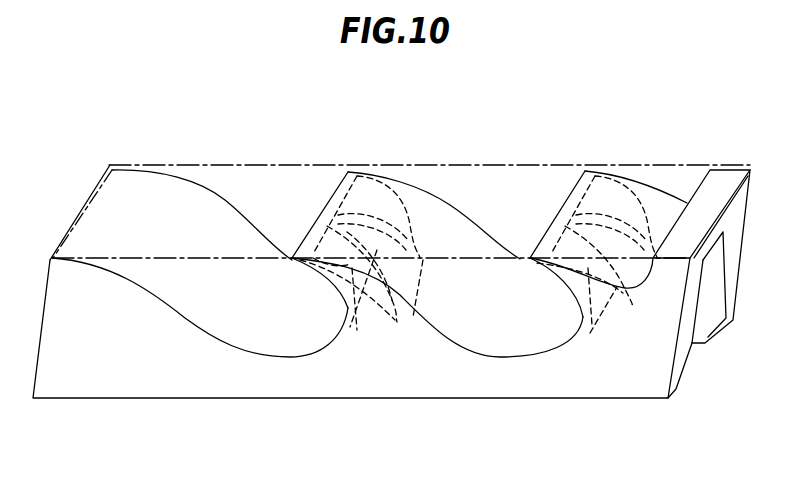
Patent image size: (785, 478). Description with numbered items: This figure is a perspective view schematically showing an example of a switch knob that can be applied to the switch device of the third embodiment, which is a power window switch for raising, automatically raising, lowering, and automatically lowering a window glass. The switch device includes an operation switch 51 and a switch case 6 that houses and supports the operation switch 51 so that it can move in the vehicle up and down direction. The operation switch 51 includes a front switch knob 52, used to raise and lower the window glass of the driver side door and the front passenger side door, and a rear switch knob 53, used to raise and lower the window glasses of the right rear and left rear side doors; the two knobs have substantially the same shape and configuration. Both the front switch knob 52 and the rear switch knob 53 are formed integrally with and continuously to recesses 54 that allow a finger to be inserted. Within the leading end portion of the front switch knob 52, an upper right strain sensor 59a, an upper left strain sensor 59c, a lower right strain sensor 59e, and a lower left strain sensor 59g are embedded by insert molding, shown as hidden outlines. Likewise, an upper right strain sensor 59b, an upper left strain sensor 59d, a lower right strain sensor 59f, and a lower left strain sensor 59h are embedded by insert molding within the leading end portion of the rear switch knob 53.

The switch case 6 is at (225, 165).
The operation switch 51 is at (135, 187).
The front switch knob 52 is at (330, 198).
The rear switch knob 53 is at (573, 188).
The recess 54 is at (255, 338).
The upper right strain sensor 59a is at (397, 177).
The upper right strain sensor 59b is at (632, 172).
The upper left strain sensor 59c is at (405, 310).
The upper left strain sensor 59d is at (608, 282).
The lower right strain sensor 59e is at (402, 210).
The lower right strain sensor 59f is at (637, 207).
The lower left strain sensor 59g is at (337, 337).
The lower left strain sensor 59h is at (577, 322).